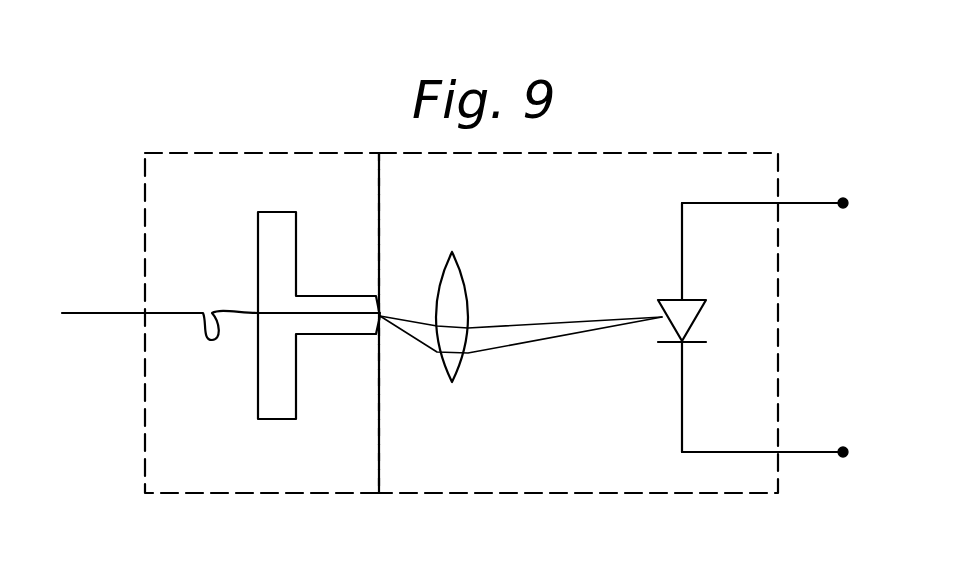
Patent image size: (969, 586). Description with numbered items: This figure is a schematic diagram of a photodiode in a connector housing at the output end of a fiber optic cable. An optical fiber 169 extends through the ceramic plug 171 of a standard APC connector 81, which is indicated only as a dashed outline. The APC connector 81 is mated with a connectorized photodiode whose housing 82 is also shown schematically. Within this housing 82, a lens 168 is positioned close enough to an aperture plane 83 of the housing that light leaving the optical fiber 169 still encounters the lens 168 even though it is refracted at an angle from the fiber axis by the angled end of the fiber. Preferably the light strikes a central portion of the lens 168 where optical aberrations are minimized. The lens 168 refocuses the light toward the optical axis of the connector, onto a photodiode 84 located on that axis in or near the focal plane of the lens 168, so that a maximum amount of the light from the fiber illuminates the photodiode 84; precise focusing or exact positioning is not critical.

The APC connector 81 is at (280, 493).
The housing 82 is at (606, 493).
The aperture plane 83 is at (379, 398).
The photodiode 84 is at (697, 300).
The lens 168 is at (457, 263).
The optical fiber 169 is at (108, 313).
The ceramic plug 171 is at (338, 296).